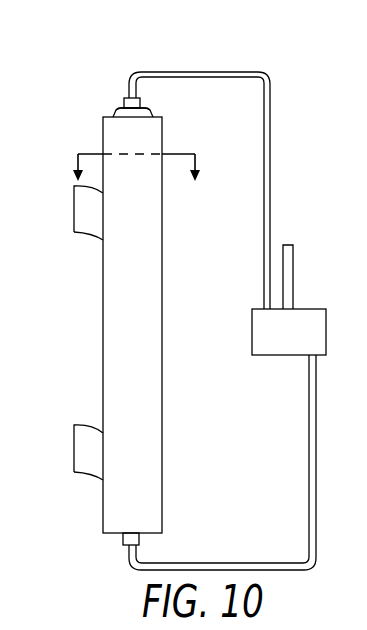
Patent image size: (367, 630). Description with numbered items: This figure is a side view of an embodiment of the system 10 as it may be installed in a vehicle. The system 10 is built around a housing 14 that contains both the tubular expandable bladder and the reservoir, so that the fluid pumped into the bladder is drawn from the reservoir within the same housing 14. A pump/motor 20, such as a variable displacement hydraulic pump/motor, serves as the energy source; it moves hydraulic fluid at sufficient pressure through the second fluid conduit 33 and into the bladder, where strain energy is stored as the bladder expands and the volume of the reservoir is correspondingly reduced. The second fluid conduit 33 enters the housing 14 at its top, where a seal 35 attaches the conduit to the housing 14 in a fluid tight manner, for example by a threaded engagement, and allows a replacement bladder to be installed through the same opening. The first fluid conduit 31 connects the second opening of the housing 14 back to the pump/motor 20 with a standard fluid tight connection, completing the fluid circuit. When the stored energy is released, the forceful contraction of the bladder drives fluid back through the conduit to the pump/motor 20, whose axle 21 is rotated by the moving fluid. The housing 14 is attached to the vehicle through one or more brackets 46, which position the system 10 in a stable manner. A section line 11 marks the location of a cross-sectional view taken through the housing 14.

The system 10 is at (251, 56).
The section line 11- 11 is at (134, 168).
The housing 14 is at (148, 292).
The pump/motor 20 is at (265, 348).
The axle 21 is at (288, 245).
The first fluid conduit 31 is at (309, 444).
The second fluid conduit 33 is at (271, 117).
The seal 35 is at (152, 108).
The bracket 46 is at (83, 214).